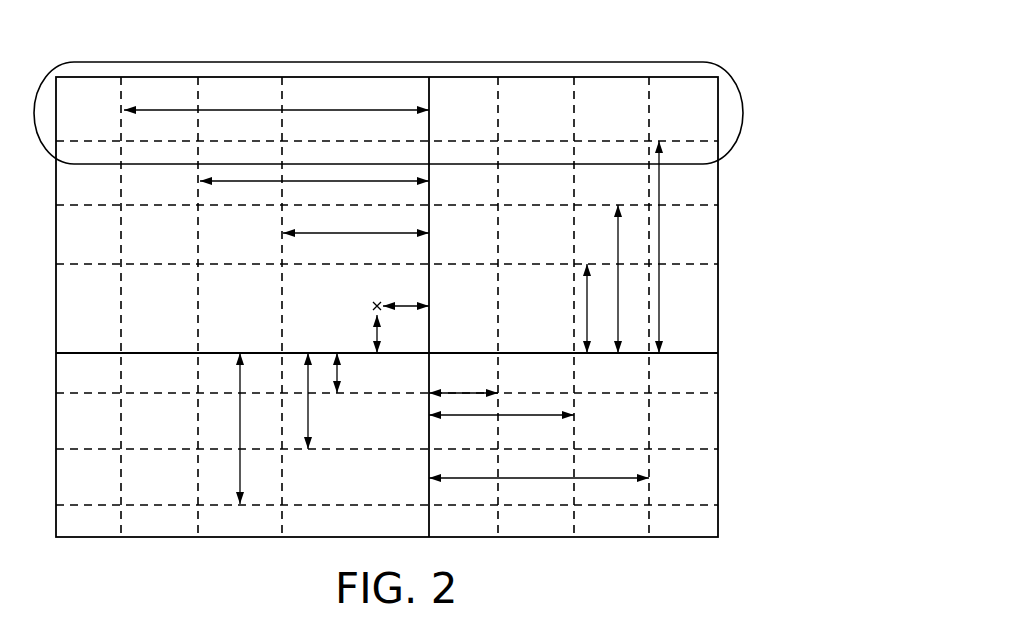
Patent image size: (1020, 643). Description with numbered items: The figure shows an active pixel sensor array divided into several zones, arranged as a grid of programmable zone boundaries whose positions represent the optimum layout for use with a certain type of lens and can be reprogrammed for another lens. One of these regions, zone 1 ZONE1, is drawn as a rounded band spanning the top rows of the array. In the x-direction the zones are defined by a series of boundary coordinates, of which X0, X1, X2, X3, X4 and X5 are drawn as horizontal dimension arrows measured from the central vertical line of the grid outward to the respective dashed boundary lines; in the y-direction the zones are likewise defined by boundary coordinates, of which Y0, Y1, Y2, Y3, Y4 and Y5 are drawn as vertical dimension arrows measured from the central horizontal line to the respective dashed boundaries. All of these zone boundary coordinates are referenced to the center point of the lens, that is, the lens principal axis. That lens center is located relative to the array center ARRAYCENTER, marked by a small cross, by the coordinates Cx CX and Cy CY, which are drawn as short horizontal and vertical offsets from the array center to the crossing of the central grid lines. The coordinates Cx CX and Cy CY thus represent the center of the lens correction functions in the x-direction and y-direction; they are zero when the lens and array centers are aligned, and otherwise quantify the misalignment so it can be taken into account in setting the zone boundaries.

The zone 1 ZONE1 is at (628, 62).
The x-direction zone boundary coordinate X0 is at (261, 111).
The x-direction zone boundary coordinate X1 is at (299, 180).
The x-direction zone boundary coordinate X2 is at (343, 234).
The x-direction zone boundary coordinate X3 is at (476, 396).
The x-direction zone boundary coordinate X4 is at (514, 418).
The x-direction zone boundary coordinate X5 is at (553, 481).
The y-direction zone boundary coordinate Y0 is at (244, 443).
The y-direction zone boundary coordinate Y1 is at (313, 414).
The y-direction zone boundary coordinate Y2 is at (343, 386).
The y-direction zone boundary coordinate Y3 is at (593, 295).
The y-direction zone boundary coordinate Y4 is at (623, 265).
The y-direction zone boundary coordinate Y5 is at (669, 233).
The coordinate Cx CX is at (406, 291).
The coordinate Cy CY is at (361, 334).
The array center ARRAYCENTER is at (370, 306).